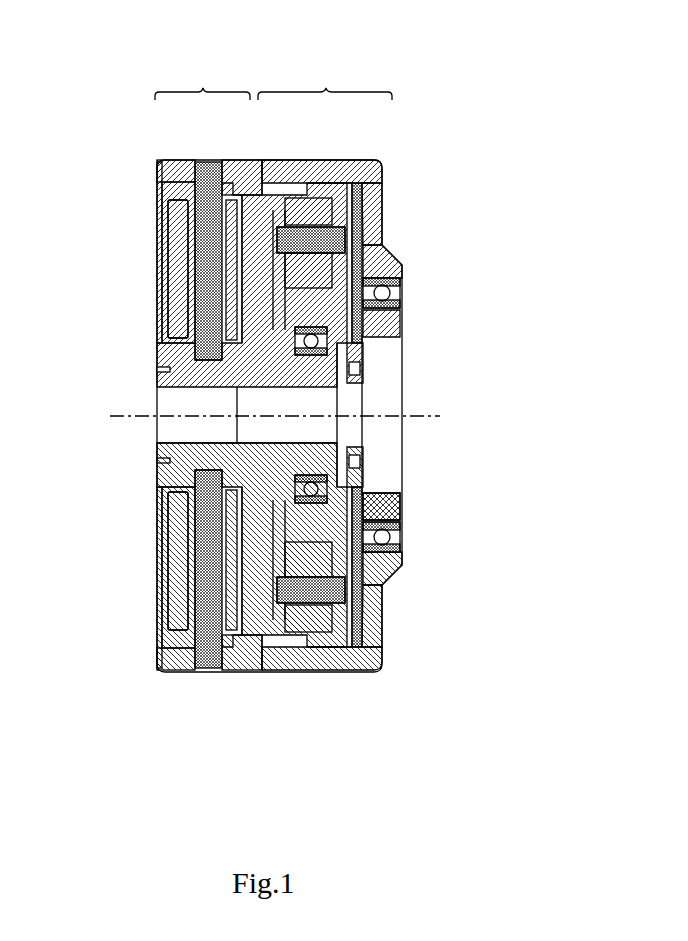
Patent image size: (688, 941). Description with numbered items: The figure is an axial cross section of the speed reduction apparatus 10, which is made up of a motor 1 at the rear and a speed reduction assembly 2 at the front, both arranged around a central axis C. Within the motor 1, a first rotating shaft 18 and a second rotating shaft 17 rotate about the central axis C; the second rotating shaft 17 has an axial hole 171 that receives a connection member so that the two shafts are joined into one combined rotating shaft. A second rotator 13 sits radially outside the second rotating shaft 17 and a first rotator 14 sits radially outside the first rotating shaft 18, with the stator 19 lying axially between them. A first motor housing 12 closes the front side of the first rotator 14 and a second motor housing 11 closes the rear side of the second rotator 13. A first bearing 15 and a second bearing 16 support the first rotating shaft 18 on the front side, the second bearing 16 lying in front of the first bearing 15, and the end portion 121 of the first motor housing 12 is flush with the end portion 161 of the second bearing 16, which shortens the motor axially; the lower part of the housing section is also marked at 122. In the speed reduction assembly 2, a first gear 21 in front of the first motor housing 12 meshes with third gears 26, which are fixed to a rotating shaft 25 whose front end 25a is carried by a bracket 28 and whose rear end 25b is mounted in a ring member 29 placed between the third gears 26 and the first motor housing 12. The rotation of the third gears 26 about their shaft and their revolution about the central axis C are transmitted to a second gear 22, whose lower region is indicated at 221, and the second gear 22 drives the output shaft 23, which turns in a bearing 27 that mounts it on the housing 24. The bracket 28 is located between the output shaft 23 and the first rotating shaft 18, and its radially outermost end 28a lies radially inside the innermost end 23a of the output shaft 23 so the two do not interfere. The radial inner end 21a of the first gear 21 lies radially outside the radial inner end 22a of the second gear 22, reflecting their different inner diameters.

The speed reduction apparatus 10 is at (285, 29).
The motor 1 is at (202, 76).
The speed reduction assembly 2 is at (325, 76).
The central axis C is at (286, 416).
The second motor housing 11 is at (186, 162).
The first motor housing 12 is at (240, 162).
The second rotator 13 is at (180, 205).
The first rotator 14 is at (205, 240).
The first bearing 15 is at (292, 332).
The second bearing 16 is at (228, 300).
The second rotating shaft 17 is at (160, 368).
The first rotating shaft 18 is at (158, 398).
The stator 19 is at (158, 166).
The first gear 21 is at (278, 162).
The second gear 22 is at (343, 168).
The output shaft 23 is at (366, 195).
The housing 24 is at (384, 236).
The rotating shaft of the third gears 25 is at (384, 240).
The third gears 26 is at (396, 268).
The bearing 27 is at (400, 286).
The bracket 28 is at (386, 334).
The ring member 29 is at (310, 178).
The end portion of the first motor housing 121 is at (366, 514).
The stator base lower portion 122 is at (240, 674).
The end portion of the second bearing 161 is at (355, 488).
The hole 171 is at (160, 461).
The cylindrical sheet lower 221 is at (290, 674).
The radial inner end of the first gear 21a is at (272, 674).
The radial inner end of the second gear 22a is at (320, 674).
The radially innermost end of the output shaft 23a is at (366, 602).
The front end of the rotating shaft of the third gears 25a is at (350, 598).
The rear end of the rotating shaft of the third gears 25b is at (165, 603).
The radially outermost end of the bracket 28a is at (350, 668).